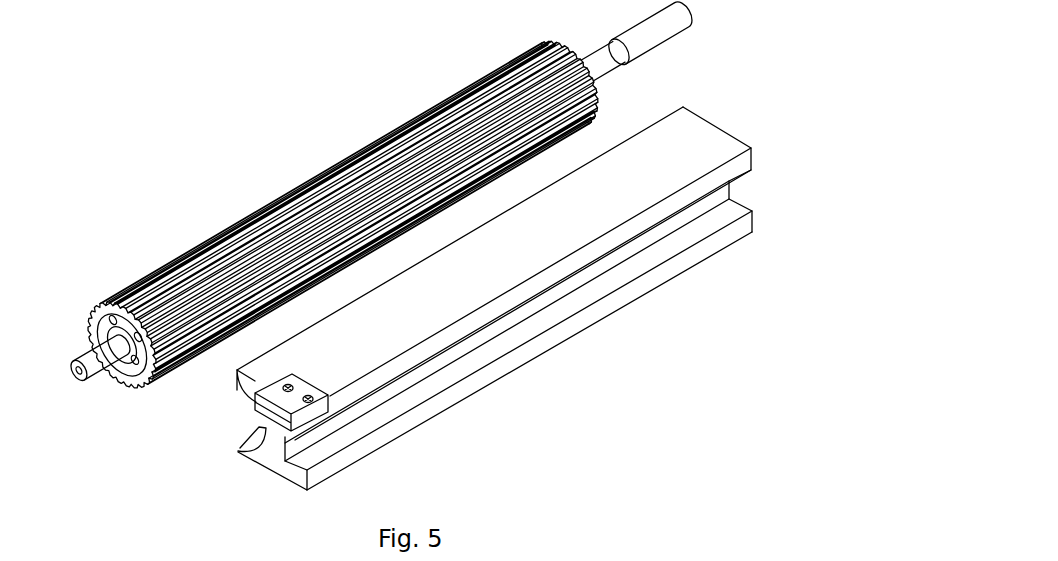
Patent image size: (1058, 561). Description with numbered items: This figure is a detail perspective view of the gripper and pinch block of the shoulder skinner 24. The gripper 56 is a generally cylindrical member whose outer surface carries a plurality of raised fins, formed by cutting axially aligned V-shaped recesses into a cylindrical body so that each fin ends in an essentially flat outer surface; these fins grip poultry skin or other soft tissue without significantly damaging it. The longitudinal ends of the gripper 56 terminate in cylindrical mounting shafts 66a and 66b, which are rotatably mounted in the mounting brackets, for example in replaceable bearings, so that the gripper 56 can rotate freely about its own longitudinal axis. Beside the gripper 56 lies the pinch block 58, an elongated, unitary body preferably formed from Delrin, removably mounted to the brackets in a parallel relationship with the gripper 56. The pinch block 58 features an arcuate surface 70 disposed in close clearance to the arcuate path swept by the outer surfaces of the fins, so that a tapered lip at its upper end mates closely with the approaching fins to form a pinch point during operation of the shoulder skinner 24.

The shoulder skinner 24 is at (455, 298).
The gripper 56 is at (362, 182).
The pinch block 58 is at (575, 302).
The cylindrical mounting shaft 66a is at (98, 362).
The cylindrical mounting shaft 66b is at (665, 32).
The arcuate surface 70 is at (243, 446).